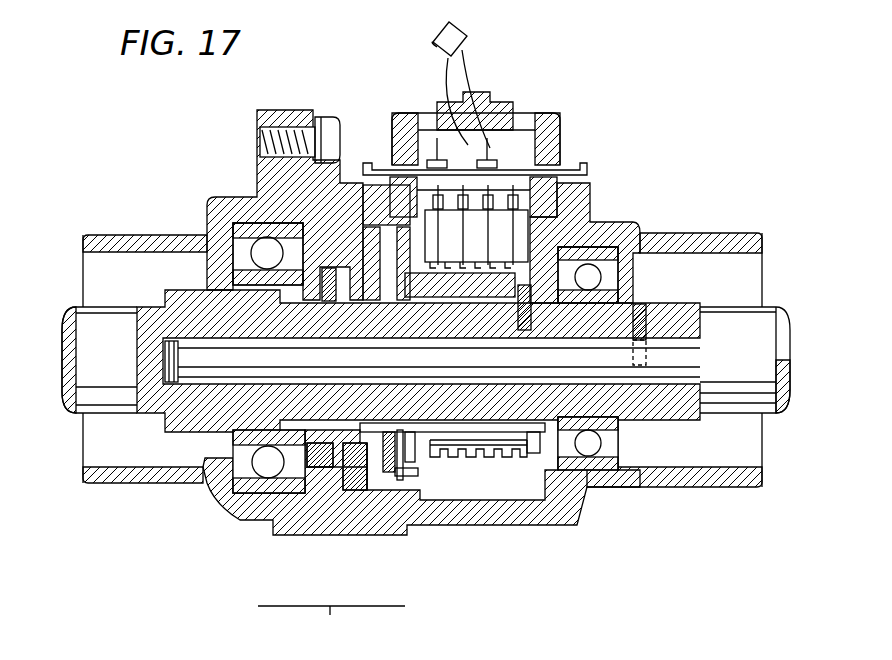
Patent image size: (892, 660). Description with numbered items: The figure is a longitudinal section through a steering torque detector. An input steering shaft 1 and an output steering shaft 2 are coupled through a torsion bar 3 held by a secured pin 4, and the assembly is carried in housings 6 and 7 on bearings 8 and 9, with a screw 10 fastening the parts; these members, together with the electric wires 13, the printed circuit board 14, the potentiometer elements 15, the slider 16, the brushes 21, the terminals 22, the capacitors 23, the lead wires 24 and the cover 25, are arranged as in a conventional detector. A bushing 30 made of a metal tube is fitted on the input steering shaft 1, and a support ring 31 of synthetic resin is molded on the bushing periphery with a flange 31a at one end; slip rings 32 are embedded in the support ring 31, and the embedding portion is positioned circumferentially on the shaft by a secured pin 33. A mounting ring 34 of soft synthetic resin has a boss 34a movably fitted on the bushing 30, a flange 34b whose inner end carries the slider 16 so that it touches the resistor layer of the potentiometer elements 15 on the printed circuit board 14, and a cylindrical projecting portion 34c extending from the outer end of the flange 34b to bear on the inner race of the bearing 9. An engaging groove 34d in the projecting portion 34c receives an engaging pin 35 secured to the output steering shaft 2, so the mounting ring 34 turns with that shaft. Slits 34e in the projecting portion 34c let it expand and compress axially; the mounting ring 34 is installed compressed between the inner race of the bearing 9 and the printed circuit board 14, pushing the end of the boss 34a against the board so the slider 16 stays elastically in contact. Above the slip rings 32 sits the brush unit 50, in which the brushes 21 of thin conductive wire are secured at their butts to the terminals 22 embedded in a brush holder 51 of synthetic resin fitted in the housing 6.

The input steering shaft 1 is at (772, 323).
The output steering shaft 2 is at (93, 320).
The torsion bar 3 is at (577, 372).
The secured pin 4 is at (643, 306).
The housing 6 is at (730, 240).
The housing 7 is at (163, 242).
The bearing 8 is at (605, 467).
The bearing 9 is at (253, 487).
The screw 10 is at (333, 113).
The electric wires 13 is at (425, 453).
The printed circuit board 14 is at (400, 490).
The potentiometer elements 15 is at (407, 480).
The slider 16 is at (387, 480).
The brushes 21 is at (530, 218).
The terminals 22 is at (555, 200).
The capacitors 23 is at (498, 160).
The lead wires 24 is at (487, 65).
The cover 25 is at (407, 113).
The bushing 30 is at (538, 425).
The support ring 31 is at (510, 467).
The flange 31a is at (412, 212).
The slip rings 32 is at (483, 460).
The secured pin 33 is at (526, 312).
The mounting ring 34 is at (328, 636).
The boss 34a is at (367, 465).
The flange 34b is at (373, 463).
The cylindrical projecting portion 34c is at (322, 463).
The engaging groove 34d is at (332, 267).
The slits 34e is at (343, 465).
The engaging pin 35 is at (258, 195).
The brush unit 50 is at (519, 225).
The brush holder 51 is at (560, 185).